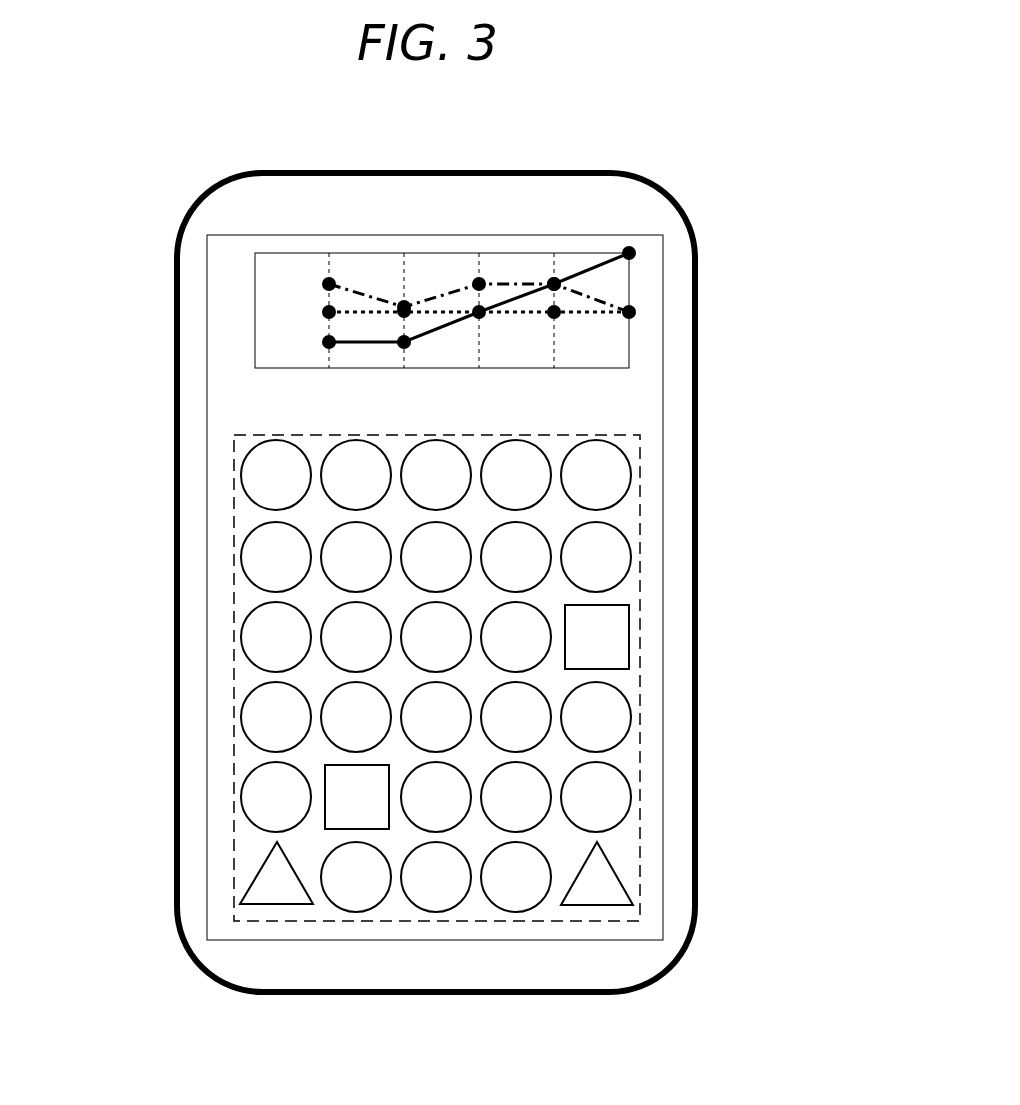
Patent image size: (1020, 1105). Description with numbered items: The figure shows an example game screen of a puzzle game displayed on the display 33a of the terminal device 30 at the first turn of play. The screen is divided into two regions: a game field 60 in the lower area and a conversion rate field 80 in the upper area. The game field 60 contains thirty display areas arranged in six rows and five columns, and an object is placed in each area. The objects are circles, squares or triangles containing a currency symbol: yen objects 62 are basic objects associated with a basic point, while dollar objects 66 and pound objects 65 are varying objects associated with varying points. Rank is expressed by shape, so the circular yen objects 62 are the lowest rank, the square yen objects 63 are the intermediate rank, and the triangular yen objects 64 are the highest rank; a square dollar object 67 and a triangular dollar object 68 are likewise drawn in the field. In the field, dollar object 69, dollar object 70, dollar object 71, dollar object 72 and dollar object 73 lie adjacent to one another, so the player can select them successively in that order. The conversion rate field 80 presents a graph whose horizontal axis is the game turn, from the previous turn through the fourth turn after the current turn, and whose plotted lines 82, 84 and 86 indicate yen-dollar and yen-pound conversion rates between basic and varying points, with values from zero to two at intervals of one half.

The terminal device 30 is at (648, 171).
The display 33a is at (422, 237).
The conversion rate field 80 is at (491, 275).
The dotted line (rate transition) 82 is at (452, 312).
The solid line (rate transition) 84 is at (603, 267).
The dash-dot line (rate transition) 86 is at (352, 292).
The game field 60 is at (425, 748).
The yen objects 62 is at (628, 547).
The yen objects in squares 63 is at (630, 642).
The yen objects in triangles 64 is at (637, 892).
The pound objects 65 is at (628, 717).
The dollar objects 66 is at (628, 795).
The square object 67 is at (375, 829).
The triangular object 68 is at (298, 904).
The dollar object 69 is at (331, 500).
The dollar object 70 is at (411, 500).
The dollar object 71 is at (411, 582).
The dollar object 72 is at (331, 662).
The dollar object 73 is at (251, 662).